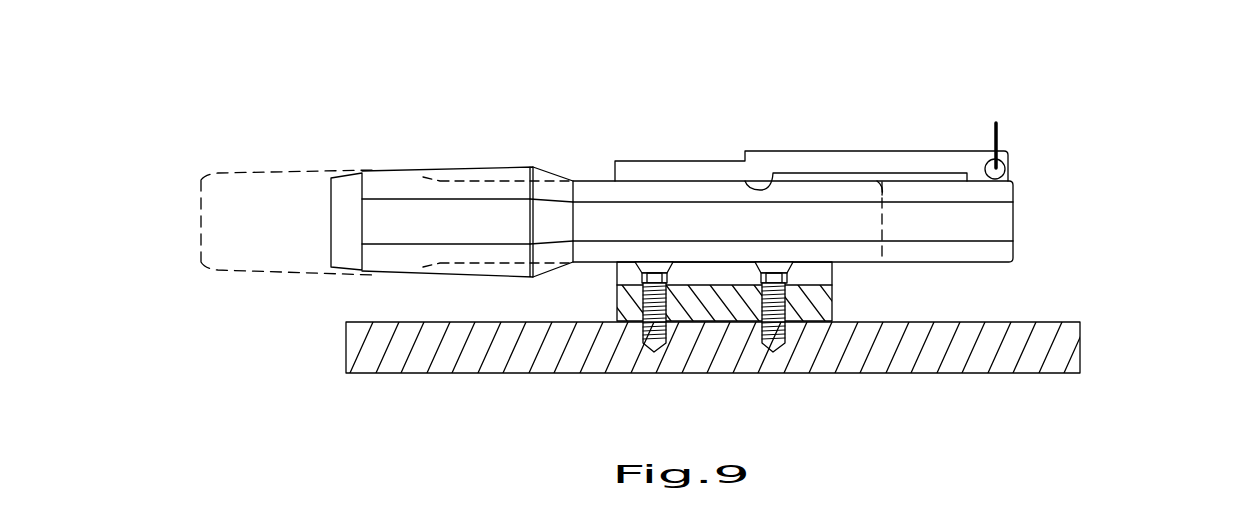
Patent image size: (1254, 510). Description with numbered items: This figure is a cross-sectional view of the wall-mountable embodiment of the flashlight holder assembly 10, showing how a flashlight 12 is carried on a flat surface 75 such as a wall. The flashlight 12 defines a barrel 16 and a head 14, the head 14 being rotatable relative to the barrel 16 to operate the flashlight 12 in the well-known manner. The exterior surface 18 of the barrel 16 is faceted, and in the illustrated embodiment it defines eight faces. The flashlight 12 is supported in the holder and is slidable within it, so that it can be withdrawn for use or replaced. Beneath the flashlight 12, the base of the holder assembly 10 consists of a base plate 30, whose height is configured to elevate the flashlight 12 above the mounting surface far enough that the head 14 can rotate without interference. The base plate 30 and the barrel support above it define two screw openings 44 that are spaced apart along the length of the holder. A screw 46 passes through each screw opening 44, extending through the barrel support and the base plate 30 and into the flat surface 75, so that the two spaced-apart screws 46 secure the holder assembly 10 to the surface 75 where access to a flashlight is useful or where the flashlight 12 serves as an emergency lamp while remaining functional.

The flashlight holder assembly 10 is at (1094, 111).
The flashlight 12 is at (569, 160).
The head 14 is at (480, 220).
The barrel 16 is at (790, 223).
The exterior surface 18 is at (993, 225).
The base plate 30 is at (617, 308).
The screw opening 44 is at (783, 308).
The screw 46 is at (783, 343).
The flat surface 75 is at (1057, 348).